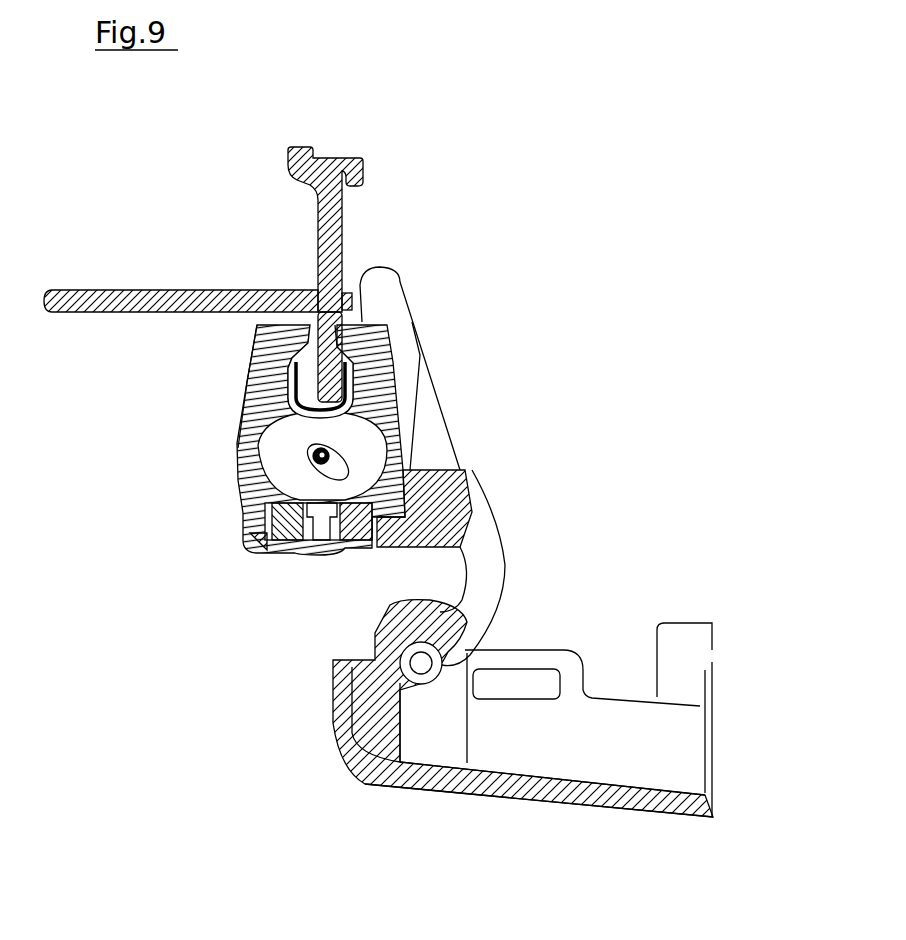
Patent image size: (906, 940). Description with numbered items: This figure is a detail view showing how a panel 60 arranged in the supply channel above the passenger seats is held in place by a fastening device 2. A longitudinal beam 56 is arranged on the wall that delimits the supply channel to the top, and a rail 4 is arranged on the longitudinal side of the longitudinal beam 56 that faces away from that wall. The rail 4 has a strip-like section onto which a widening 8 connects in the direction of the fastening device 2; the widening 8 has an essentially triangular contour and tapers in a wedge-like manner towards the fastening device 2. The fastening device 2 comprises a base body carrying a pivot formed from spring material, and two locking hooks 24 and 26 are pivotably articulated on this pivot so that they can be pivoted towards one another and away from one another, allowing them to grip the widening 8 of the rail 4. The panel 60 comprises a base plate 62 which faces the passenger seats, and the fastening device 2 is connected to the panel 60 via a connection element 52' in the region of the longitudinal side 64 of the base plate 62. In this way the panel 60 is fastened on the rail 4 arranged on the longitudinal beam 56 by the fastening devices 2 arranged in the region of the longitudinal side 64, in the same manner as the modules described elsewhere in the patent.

The fastening device 2 is at (228, 541).
The rail 4 is at (300, 319).
The widening 8 is at (252, 382).
The locking hook 24 is at (393, 355).
The locking hook 26 is at (257, 415).
The longitudinal beam 56 is at (330, 200).
The connection element 52' is at (519, 568).
The panel 60 is at (477, 798).
The base plate 62 is at (572, 792).
The longitudinal side 64 is at (333, 722).